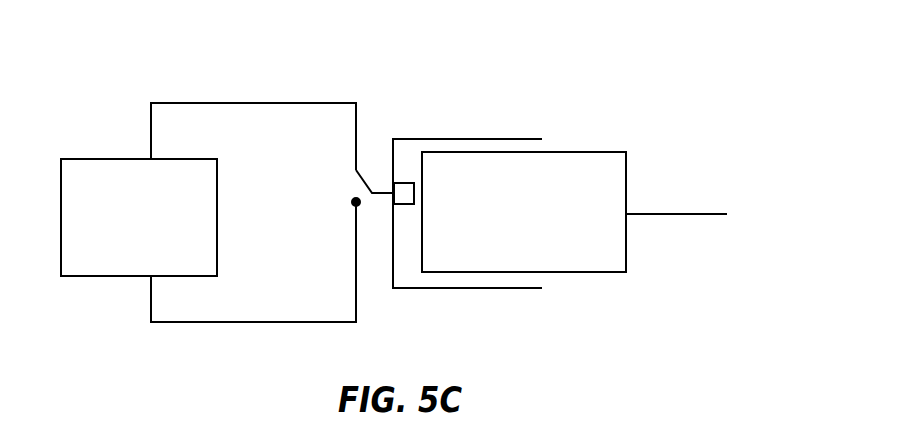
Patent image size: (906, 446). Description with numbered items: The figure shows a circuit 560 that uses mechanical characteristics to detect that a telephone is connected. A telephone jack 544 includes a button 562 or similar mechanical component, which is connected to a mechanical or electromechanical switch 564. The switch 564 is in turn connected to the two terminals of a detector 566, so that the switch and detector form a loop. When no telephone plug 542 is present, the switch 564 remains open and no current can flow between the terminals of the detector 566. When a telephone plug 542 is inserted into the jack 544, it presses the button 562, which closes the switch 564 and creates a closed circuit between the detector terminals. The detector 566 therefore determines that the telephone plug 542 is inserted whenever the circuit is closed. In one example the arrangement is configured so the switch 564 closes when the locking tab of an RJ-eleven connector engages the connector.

The telephone plug 542 is at (597, 150).
The telephone jack 544 is at (485, 137).
The circuit 560 is at (537, 362).
The button 562 is at (404, 180).
The switch 564 is at (367, 178).
The detector 566 is at (139, 217).